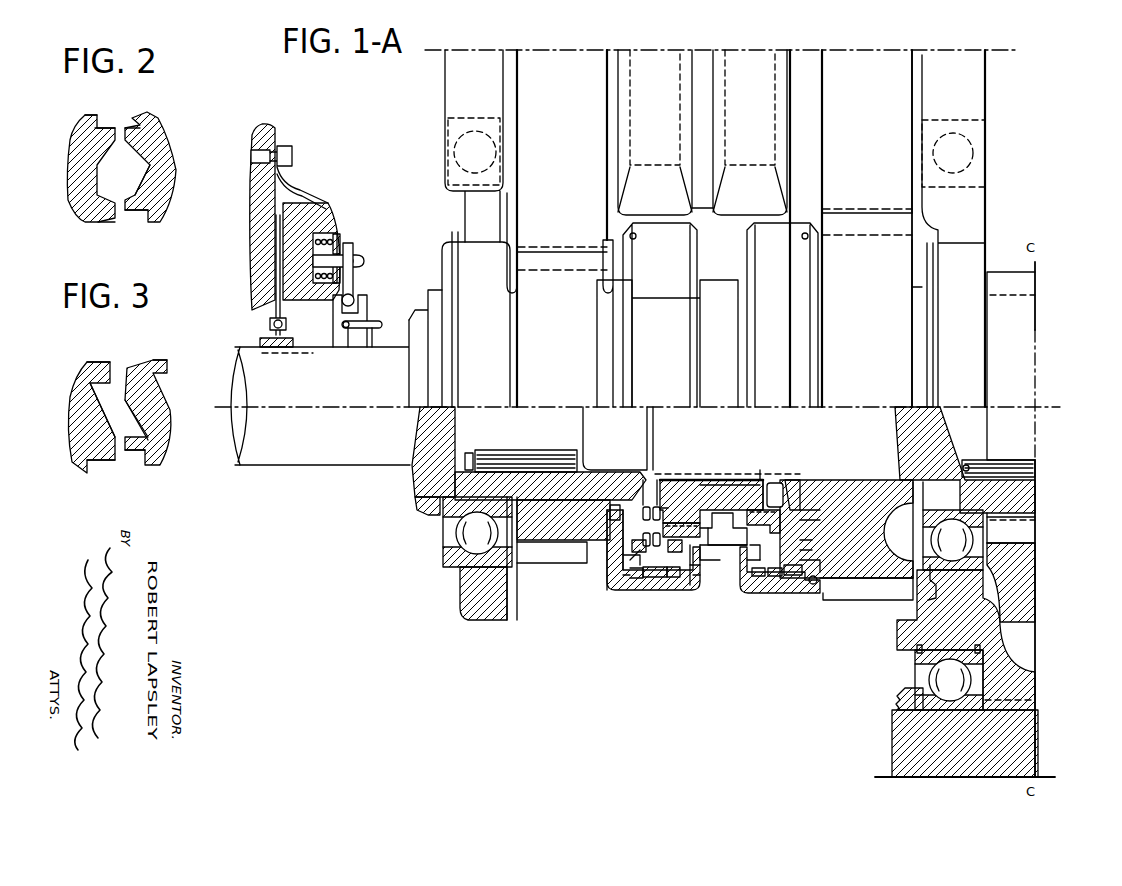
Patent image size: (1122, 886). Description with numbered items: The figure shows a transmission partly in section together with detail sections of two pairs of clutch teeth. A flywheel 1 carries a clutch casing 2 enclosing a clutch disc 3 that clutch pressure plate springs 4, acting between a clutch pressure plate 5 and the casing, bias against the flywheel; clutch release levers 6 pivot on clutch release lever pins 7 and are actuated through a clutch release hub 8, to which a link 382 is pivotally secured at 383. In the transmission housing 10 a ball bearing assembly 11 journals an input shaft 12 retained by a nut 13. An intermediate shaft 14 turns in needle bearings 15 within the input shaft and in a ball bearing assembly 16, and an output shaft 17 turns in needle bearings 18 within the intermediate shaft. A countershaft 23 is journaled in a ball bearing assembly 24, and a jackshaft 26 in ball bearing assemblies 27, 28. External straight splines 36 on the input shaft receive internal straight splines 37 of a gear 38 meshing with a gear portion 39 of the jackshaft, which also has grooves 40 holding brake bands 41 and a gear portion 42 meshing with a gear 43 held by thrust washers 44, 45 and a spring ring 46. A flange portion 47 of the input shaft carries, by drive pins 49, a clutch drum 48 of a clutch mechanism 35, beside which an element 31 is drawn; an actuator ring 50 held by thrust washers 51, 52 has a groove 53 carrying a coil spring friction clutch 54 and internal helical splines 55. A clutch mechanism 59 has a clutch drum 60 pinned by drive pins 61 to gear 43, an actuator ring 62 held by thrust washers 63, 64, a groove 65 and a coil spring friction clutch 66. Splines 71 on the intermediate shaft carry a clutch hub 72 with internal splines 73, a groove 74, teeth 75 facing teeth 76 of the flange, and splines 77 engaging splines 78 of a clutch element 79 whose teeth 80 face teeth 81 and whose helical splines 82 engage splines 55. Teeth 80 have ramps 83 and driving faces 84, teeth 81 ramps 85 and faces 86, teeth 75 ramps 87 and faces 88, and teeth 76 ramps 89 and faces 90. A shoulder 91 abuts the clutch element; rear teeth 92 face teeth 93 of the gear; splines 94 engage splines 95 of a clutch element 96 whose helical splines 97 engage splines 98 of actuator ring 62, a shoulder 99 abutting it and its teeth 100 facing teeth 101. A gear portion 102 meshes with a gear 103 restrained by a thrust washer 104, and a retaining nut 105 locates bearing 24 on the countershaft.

In FIG. 1-A, the flywheel 1 is at (272, 131).
In FIG. 1-A, the clutch casing 2 is at (292, 182).
In FIG. 1-A, the clutch disc 3 is at (283, 296).
In FIG. 1-A, the clutch pressure plate springs 4 is at (336, 238).
In FIG. 1-A, the clutch pressure plate 5 is at (330, 203).
In FIG. 1-A, the clutch release levers 6 is at (356, 276).
In FIG. 1-A, the clutch release lever pins 7 is at (346, 257).
In FIG. 1-A, the clutch release hub 8 is at (365, 313).
In FIG. 1-A, the link 382 is at (373, 330).
In FIG. 1-A, the pivot 383 is at (346, 330).
In FIG. 1-A, the transmission housing 10 is at (456, 215).
In FIG. 1-A, the ball bearing assembly 11 is at (458, 535).
In FIG. 1-A, the input shaft 12 is at (412, 480).
In FIG. 1-A, the nut 13 is at (418, 510).
In FIG. 1-A, the intermediate shaft 14 is at (712, 428).
In FIG. 1-A, the needle bearings 15 is at (510, 457).
In FIG. 1-A, the ball bearing assembly 16 is at (952, 528).
In FIG. 1-A, the output shaft 17 is at (1022, 440).
In FIG. 1-A, the needle bearings 18 is at (1032, 469).
In FIG. 1-A, the countershaft 23 is at (1040, 748).
In FIG. 1-A, the ball bearing assembly 24 is at (930, 680).
In FIG. 1-A, the jackshaft 26 is at (455, 85).
In FIG. 1-A, the ball bearing assembly 27 is at (452, 143).
In FIG. 1-A, the ball bearing assembly 28 is at (985, 150).
In FIG. 1-A, the seal ring 31 is at (643, 512).
In FIG. 1-A, the clutch mechanism 35 is at (622, 646).
In FIG. 1-A, the external straight splines 36 is at (575, 497).
In FIG. 1-A, the internal straight splines 37 is at (602, 510).
In FIG. 1-A, the gear 38 is at (545, 564).
In FIG. 1-A, the gear portion 39 is at (568, 50).
In FIG. 1-A, the circumferential grooves 40 is at (658, 162).
In FIG. 1-A, the brake bands 41 is at (628, 192).
In FIG. 1-A, the gear portion 42 is at (868, 50).
In FIG. 1-A, the gear 43 is at (866, 400).
In FIG. 1-A, the thrust washer 44 is at (905, 482).
In FIG. 1-A, the wedge 45 is at (798, 480).
In FIG. 1-A, the spring ring 46 is at (784, 480).
In FIG. 1-A, the flange portion 47 is at (632, 558).
In FIG. 1-A, the clutch drum 48 is at (656, 578).
In FIG. 1-A, the drive pins 49 is at (635, 237).
In FIG. 1-A, the actuator ring 50 is at (696, 588).
In FIG. 1-A, the thrust washer 51 is at (694, 580).
In FIG. 1-A, the thrust washer 52 is at (626, 577).
In FIG. 1-A, the external peripheral groove 53 is at (676, 578).
In FIG. 1-A, the coil spring friction clutch 54 is at (636, 580).
In FIG. 1-A, the internal helical splines 55 is at (630, 562).
In FIG. 1-A, the clutch mechanism 59 is at (790, 646).
In FIG. 1-A, the clutch drum 60 is at (822, 594).
In FIG. 1-A, the drive pins 61 is at (803, 237).
In FIG. 1-A, the actuator ring 62 is at (756, 580).
In FIG. 1-A, the thrust washer 63 is at (748, 570).
In FIG. 1-A, the thrust washer 64 is at (816, 563).
In FIG. 1-A, the external peripheral groove 65 is at (775, 578).
In FIG. 1-A, the coil spring friction clutch 66 is at (793, 578).
In FIG. 1-A, the external straight splines 71 is at (762, 472).
In FIG. 1-A, the clutch hub 72 is at (758, 480).
In FIG. 1-A, the internal straight splines 73 is at (700, 466).
In FIG. 1-A, the annular groove 74 is at (722, 522).
In FIG. 3, the jaw clutch teeth 75 is at (165, 435).
In FIG. 1-A, the jaw clutch teeth 75 is at (657, 482).
In FIG. 3, the jaw clutch teeth 76 is at (78, 440).
In FIG. 1-A, the jaw clutch teeth 76 is at (643, 482).
In FIG. 1-A, the external straight splines 77 is at (680, 523).
In FIG. 1-A, the internal straight splines 78 is at (690, 523).
In FIG. 1-A, the clutch element 79 is at (702, 552).
In FIG. 2, the jaw clutch teeth 80 is at (168, 181).
In FIG. 1-A, the jaw clutch teeth 80 is at (621, 545).
In FIG. 2, the jaw clutch teeth 81 is at (78, 178).
In FIG. 1-A, the jaw clutch teeth 81 is at (616, 508).
In FIG. 1-A, the external helical splines 82 is at (696, 562).
In FIG. 2, the ramps 83 is at (150, 168).
In FIG. 2, the driving faces 84 is at (140, 125).
In FIG. 2, the ramps 85 is at (95, 165).
In FIG. 2, the driving faces 86 is at (92, 118).
In FIG. 3, the ramps 87 is at (150, 410).
In FIG. 3, the driving faces 88 is at (140, 368).
In FIG. 3, the ramps 89 is at (88, 420).
In FIG. 3, the driving faces 90 is at (100, 367).
In FIG. 1-A, the annular shoulder 91 is at (715, 546).
In FIG. 1-A, the jaw clutch teeth 92 is at (778, 505).
In FIG. 1-A, the jaw clutch teeth 93 is at (795, 508).
In FIG. 1-A, the external straight splines 94 is at (778, 522).
In FIG. 1-A, the internal straight splines 95 is at (756, 515).
In FIG. 1-A, the clutch element 96 is at (812, 551).
In FIG. 1-A, the external helical splines 97 is at (752, 552).
In FIG. 1-A, the internal helical splines 98 is at (812, 541).
In FIG. 1-A, the annular shoulder 99 is at (708, 526).
In FIG. 1-A, the jaw clutch teeth 100 is at (810, 512).
In FIG. 1-A, the jaw clutch teeth 101 is at (810, 522).
In FIG. 1-A, the gear portion 102 is at (1025, 535).
In FIG. 1-A, the gear 103 is at (1022, 570).
In FIG. 1-A, the thrust washer 104 is at (990, 720).
In FIG. 1-A, the retaining nut 105 is at (900, 694).